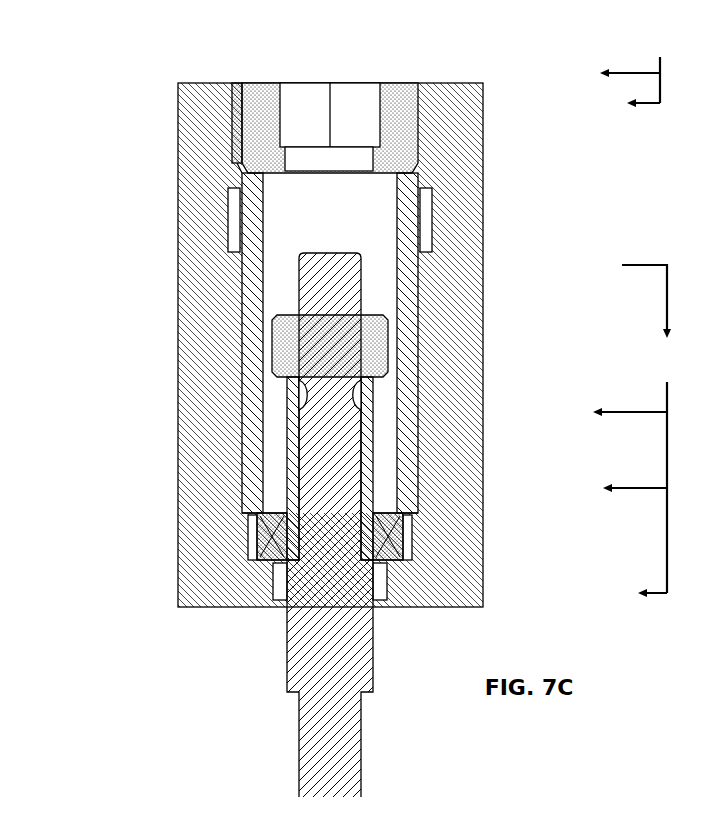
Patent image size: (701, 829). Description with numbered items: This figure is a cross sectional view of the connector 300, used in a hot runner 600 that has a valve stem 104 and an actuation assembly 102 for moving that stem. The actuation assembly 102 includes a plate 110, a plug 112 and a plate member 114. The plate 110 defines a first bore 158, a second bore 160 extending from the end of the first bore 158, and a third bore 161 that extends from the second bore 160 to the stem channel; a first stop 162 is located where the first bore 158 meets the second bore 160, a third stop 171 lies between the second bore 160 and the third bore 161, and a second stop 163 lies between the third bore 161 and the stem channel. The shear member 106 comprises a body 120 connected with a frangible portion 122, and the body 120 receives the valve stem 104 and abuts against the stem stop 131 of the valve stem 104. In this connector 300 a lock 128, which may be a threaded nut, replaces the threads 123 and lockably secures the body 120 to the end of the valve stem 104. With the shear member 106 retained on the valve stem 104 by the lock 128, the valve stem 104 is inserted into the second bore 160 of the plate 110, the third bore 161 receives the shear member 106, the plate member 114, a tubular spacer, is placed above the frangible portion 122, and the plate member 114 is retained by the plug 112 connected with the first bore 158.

The hot runner 600 is at (328, 406).
The actuation assembly 102 is at (640, 65).
The plate 110 is at (483, 124).
The plate member 114 is at (418, 207).
The first bore 158 is at (242, 182).
The plug 112 is at (397, 83).
The second bore 160 is at (418, 302).
The first stop 162 is at (230, 252).
The connector 300 is at (615, 296).
The shear member 106 is at (639, 473).
The threads 123 is at (361, 326).
The lock 128 is at (387, 335).
The body 120 is at (374, 452).
The frangible portion 122 is at (400, 547).
The third stop 171 is at (243, 513).
The third bore 161 is at (248, 537).
The second stop 163 is at (253, 558).
The stem stop 131 is at (368, 562).
The valve stem 104 is at (427, 525).